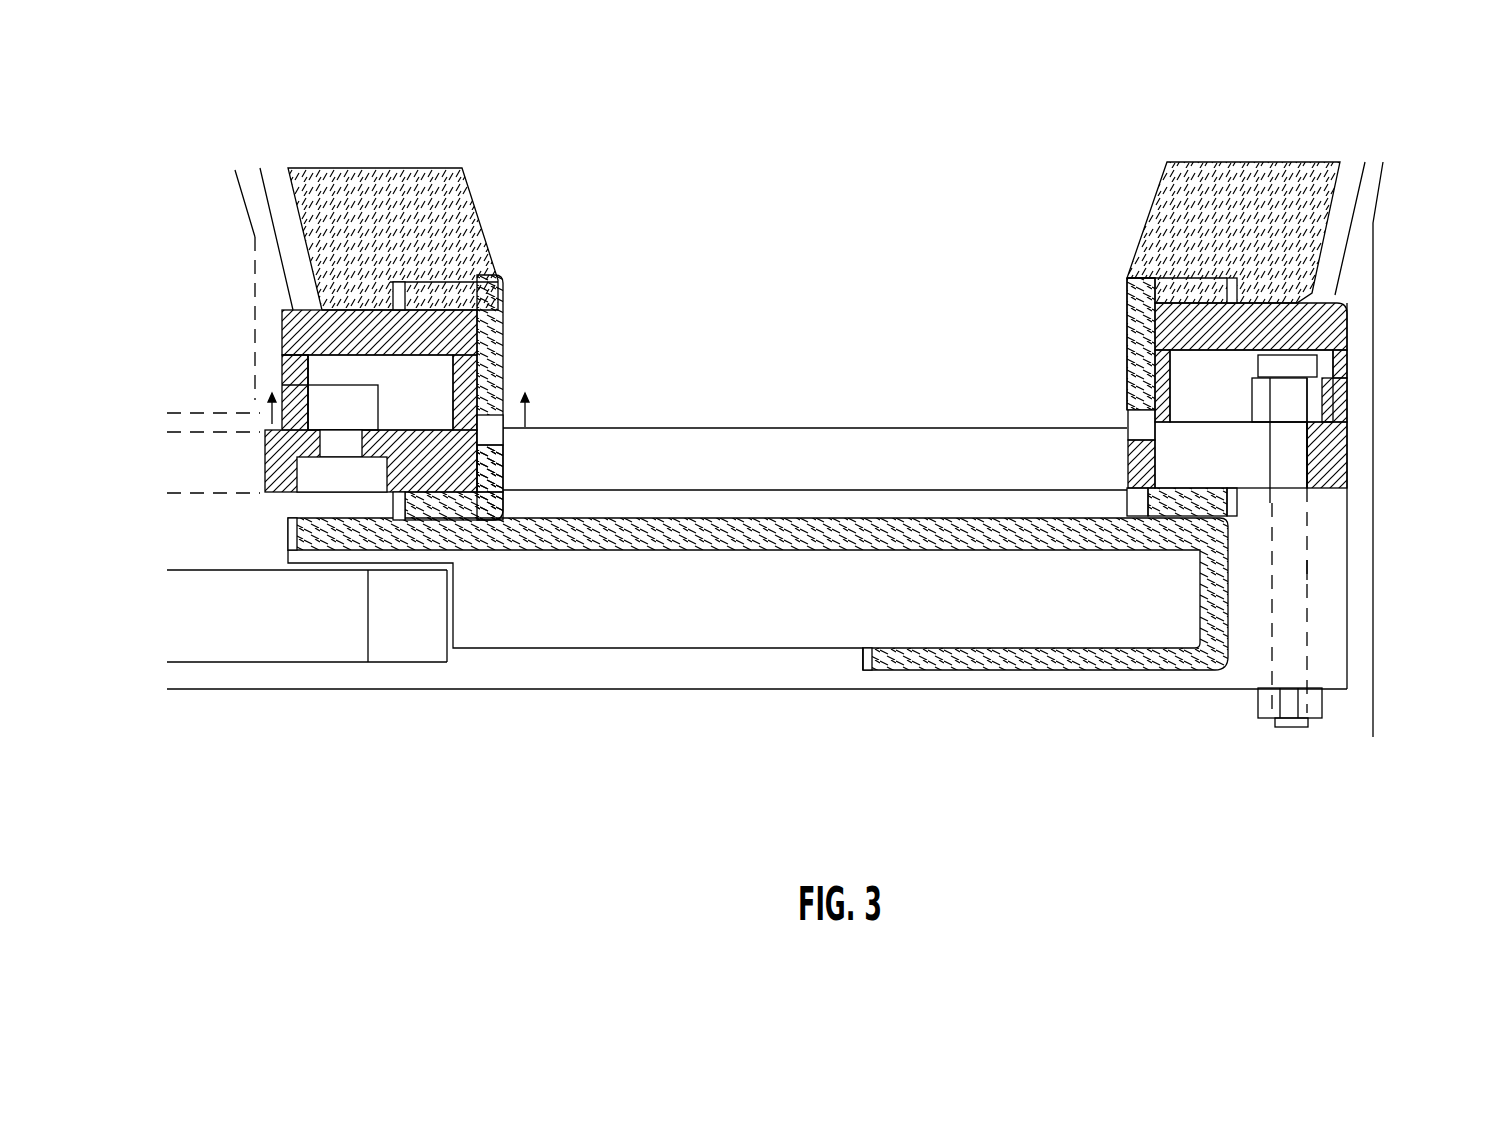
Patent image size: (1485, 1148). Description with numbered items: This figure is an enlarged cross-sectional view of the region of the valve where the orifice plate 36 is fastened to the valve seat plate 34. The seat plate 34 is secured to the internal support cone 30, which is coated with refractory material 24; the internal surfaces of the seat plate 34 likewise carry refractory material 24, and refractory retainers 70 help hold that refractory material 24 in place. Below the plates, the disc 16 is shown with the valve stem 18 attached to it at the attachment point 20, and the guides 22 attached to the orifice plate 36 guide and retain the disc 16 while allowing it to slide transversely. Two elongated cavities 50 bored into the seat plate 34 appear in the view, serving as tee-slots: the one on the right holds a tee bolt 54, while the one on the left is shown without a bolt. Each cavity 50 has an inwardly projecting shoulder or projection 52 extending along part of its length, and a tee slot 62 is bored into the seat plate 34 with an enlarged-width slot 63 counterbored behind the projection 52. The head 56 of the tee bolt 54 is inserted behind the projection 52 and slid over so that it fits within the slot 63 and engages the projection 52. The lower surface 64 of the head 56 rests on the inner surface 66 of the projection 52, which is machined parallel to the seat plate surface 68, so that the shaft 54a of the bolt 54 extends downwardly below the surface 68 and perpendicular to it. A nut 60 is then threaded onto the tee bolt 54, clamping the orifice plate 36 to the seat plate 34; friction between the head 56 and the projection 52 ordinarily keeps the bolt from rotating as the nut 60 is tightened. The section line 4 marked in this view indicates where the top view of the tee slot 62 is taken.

The section line 4- 4 is at (357, 365).
The disc 16 is at (610, 650).
The valve stem 18 is at (228, 665).
The attachment point 20 is at (448, 660).
The guides 22 is at (1083, 690).
The refractory material 24 is at (395, 187).
The internal support cone 30 is at (273, 177).
The valve seat plate 34 is at (1352, 318).
The orifice plate 36 is at (782, 475).
The cavity 50 is at (433, 397).
The projection 52 is at (355, 428).
The tee bolt 54 is at (1340, 412).
The shaft 54a is at (1307, 570).
The head 56 is at (1347, 367).
The nut 60 is at (1257, 702).
The tee slot 62 is at (477, 353).
The slot 63 is at (293, 367).
The lower surface 64 is at (1307, 383).
The inner surface 66 is at (1140, 313).
The surface 68 is at (283, 448).
The refractory retainers 70 is at (860, 660).